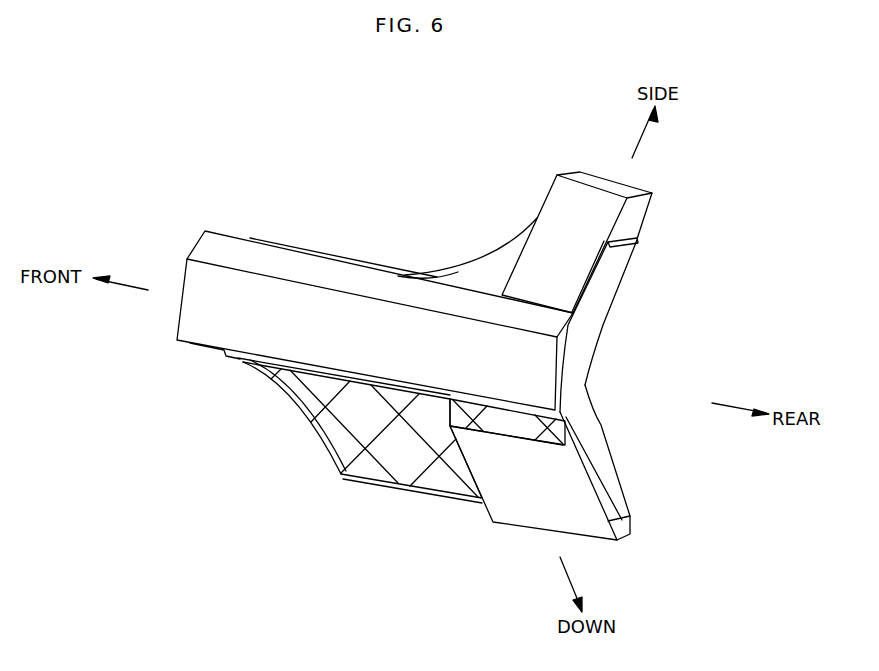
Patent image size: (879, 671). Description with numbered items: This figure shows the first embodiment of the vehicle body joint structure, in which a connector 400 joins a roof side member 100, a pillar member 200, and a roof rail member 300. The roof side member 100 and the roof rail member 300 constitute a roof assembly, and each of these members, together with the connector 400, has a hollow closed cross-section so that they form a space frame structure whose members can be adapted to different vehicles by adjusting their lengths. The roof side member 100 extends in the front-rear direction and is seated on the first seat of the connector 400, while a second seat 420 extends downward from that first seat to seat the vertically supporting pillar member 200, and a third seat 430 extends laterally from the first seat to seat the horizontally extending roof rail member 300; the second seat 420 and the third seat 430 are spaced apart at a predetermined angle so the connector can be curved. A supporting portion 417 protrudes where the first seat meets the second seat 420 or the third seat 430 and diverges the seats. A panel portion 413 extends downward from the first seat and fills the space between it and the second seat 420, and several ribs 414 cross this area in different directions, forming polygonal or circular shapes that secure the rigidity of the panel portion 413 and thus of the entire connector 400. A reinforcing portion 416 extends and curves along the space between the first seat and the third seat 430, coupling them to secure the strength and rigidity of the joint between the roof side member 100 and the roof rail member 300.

The roof side member 100 is at (333, 312).
The pillar member 200 is at (513, 500).
The roof rail member 300 is at (570, 200).
The connector 400 is at (637, 389).
The panel portion 413 is at (360, 472).
The ribs 414 is at (396, 459).
The reinforcing portion 416 is at (489, 272).
The supporting portion 417 is at (520, 434).
The second seat 420 is at (606, 484).
The third seat 430 is at (606, 272).